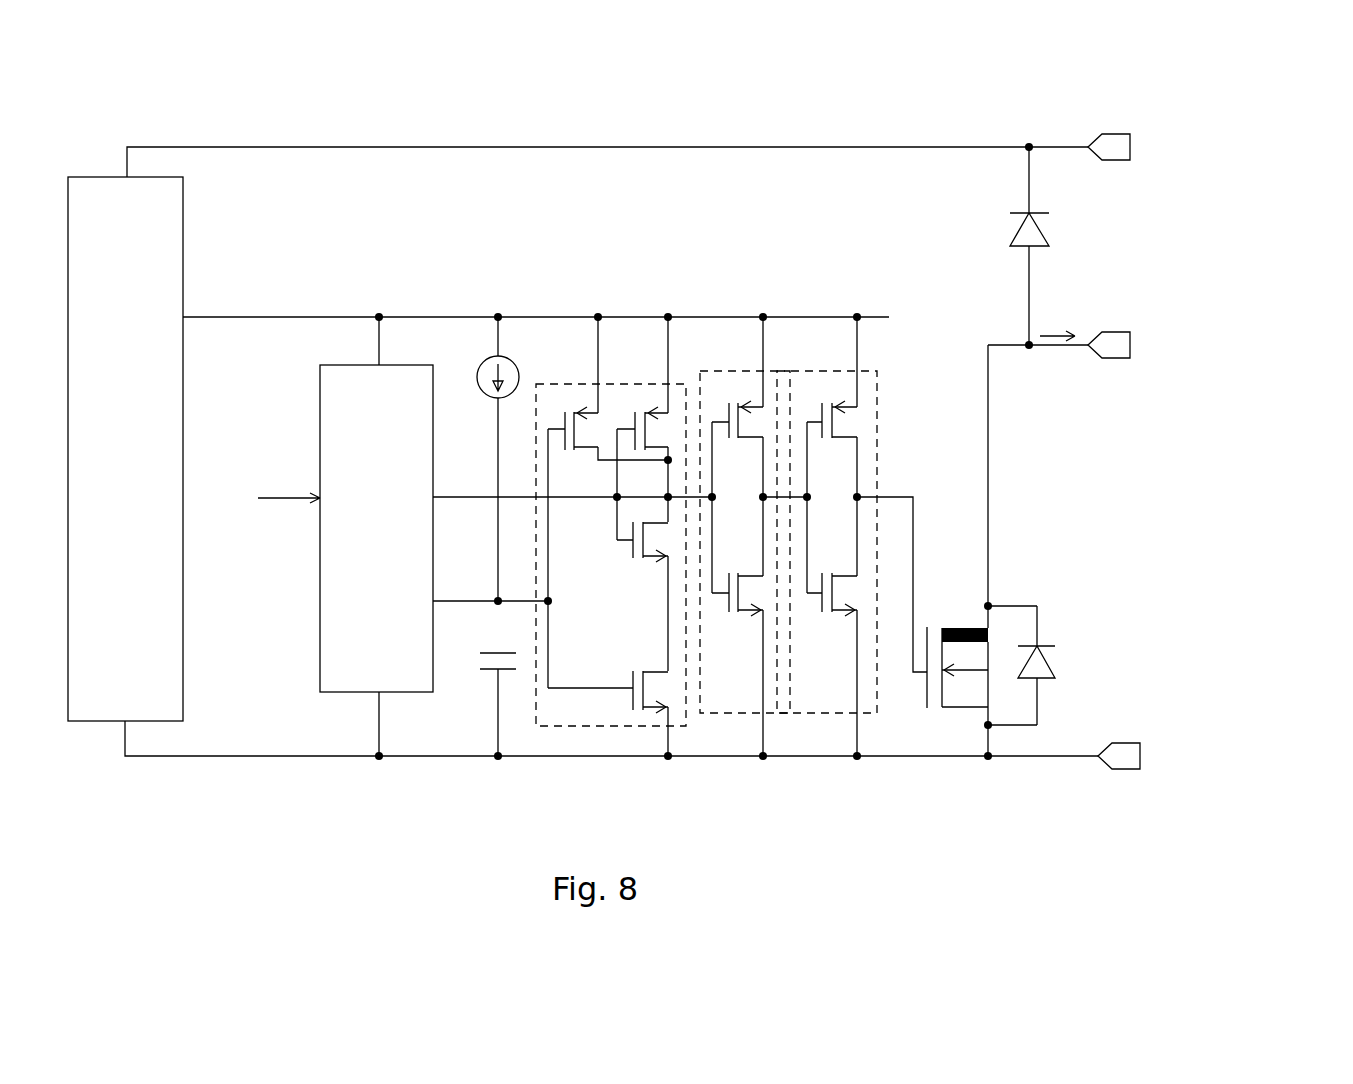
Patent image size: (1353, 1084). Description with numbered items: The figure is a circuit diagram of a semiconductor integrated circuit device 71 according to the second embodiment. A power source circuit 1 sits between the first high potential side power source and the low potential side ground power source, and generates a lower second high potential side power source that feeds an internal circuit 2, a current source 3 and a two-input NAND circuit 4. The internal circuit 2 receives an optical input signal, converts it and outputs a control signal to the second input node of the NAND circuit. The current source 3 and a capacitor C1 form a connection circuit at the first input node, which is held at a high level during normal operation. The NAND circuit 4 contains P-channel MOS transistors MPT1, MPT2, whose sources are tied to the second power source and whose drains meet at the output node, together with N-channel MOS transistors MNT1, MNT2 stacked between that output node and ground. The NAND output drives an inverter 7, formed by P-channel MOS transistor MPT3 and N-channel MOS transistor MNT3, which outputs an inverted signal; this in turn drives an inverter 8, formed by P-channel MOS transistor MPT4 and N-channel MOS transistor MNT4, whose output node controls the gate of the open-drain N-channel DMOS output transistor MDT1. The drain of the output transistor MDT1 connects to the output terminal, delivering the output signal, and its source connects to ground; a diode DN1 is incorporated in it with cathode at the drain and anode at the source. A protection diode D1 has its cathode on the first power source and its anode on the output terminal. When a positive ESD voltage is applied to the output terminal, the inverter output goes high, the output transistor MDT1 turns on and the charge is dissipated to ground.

The power source circuit 1 is at (183, 247).
The internal circuit 2 is at (320, 627).
The current source 3 is at (486, 387).
The 2-input NAND circuit 4 is at (583, 563).
The inverter 7 is at (765, 536).
The inverter 8 is at (871, 536).
The semiconductor integrated circuit device 71 is at (1208, 214).
The capacitor C1 is at (481, 660).
The diode D1 is at (1057, 233).
The diode DN1 is at (1055, 661).
The output transistor MDT1 is at (1012, 628).
The P-channel MOS transistor MPT1 is at (566, 406).
The P-channel MOS transistor MPT2 is at (648, 401).
The P-channel MOS transistor MPT3 is at (753, 423).
The P-channel MOS transistor MPT4 is at (852, 424).
The N-channel MOS transistor MNT1 is at (620, 550).
The N-channel MOS transistor MNT2 is at (624, 674).
The N-channel MOS transistor MNT3 is at (742, 616).
The N-channel MOS transistor MNT4 is at (833, 616).